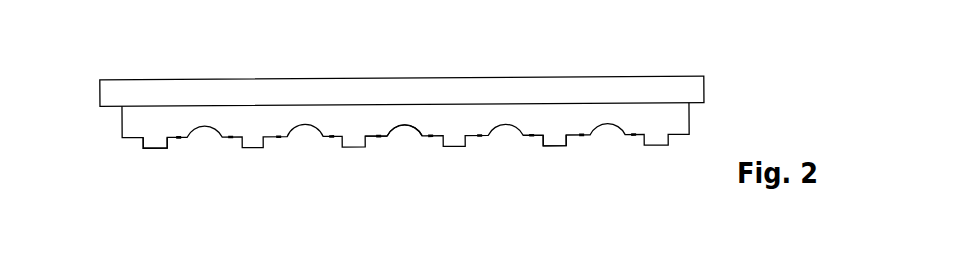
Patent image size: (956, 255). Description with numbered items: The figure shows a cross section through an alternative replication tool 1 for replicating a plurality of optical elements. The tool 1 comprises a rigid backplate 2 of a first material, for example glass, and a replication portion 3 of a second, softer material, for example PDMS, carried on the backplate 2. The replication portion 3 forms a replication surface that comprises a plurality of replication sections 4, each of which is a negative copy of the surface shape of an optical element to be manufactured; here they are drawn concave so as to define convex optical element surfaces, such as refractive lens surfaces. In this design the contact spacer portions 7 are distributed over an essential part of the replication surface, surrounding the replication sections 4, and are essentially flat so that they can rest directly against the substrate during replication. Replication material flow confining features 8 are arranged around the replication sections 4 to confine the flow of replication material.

The tool 1 is at (166, 59).
The rigid backplate 2 is at (577, 85).
The replication portion 3 is at (469, 117).
The replication section 4 is at (411, 141).
The contact spacer portion 7 is at (157, 150).
The replication material flow confining feature 8 is at (377, 137).